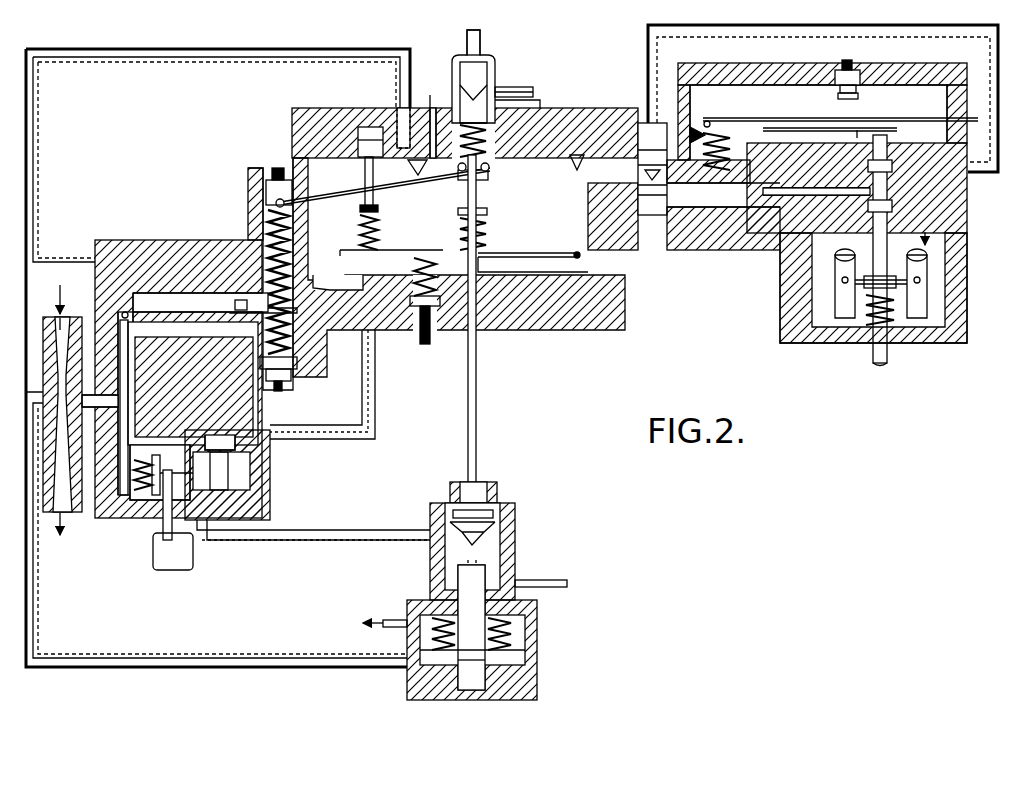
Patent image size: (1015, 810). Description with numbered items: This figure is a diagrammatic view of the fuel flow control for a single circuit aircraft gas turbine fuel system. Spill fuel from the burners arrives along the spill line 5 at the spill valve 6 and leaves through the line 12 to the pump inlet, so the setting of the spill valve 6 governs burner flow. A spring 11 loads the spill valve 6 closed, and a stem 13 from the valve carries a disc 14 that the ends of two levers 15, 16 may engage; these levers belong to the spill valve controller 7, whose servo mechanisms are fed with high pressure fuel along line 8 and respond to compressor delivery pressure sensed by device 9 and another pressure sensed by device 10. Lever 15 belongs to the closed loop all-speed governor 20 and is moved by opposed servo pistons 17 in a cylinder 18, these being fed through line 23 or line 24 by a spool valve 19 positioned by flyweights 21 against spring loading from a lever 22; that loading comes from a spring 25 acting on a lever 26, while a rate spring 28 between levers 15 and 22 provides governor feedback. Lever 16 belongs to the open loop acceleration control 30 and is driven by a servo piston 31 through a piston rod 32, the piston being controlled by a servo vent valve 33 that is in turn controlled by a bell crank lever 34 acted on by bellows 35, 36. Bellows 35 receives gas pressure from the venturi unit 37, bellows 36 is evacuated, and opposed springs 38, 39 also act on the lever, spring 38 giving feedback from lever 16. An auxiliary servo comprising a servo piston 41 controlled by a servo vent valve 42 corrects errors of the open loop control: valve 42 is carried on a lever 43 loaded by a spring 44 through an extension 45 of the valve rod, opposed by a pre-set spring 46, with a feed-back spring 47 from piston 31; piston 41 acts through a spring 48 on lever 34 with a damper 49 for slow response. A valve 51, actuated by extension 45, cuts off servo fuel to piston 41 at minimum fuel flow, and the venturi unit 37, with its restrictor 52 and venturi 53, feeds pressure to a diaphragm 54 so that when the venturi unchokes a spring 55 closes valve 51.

The spill line 5 is at (520, 87).
The spill valve 6 is at (500, 72).
The spill valve controller 7 is at (510, 338).
The high pressure fuel line 8 is at (578, 598).
The compressor delivery pressure sensing device 9 is at (60, 295).
The pressure sensing device 10 is at (228, 570).
The spring 11 is at (523, 104).
The line 12 is at (480, 44).
The stem 13 is at (492, 170).
The disc 14 is at (457, 210).
The lever 15 is at (540, 172).
The lever 16 is at (456, 178).
The servo pistons 17 is at (645, 123).
The cylinder 18 is at (645, 205).
The spool valve 19 is at (892, 195).
The all-speed governor 20 is at (777, 300).
The flyweights 21 is at (915, 310).
The lever 22 is at (897, 129).
The line 23 is at (700, 218).
The line 24 is at (793, 35).
The spring 25 is at (858, 90).
The lever 26 is at (748, 125).
The rate spring 28 is at (745, 225).
The acceleration control 30 is at (245, 188).
The servo piston 31 is at (370, 127).
The piston rod 32 is at (365, 175).
The servo vent valve 33 is at (235, 306).
The bell crank lever 34 is at (127, 318).
The bellows 35 is at (128, 428).
The bellows 36 is at (160, 403).
The venturi unit 37 is at (62, 414).
The spring 38 is at (260, 232).
The spring 39 is at (295, 368).
The servo piston 41 is at (228, 472).
The servo vent valve 42 is at (350, 262).
The lever 43 is at (552, 262).
The spring 44 is at (488, 226).
The extension 45 is at (477, 205).
The pre-set spring 46 is at (408, 268).
The feed-back spring 47 is at (358, 235).
The spring 48 is at (138, 460).
The damper 49 is at (185, 562).
The valve 51 is at (512, 520).
The restrictor 52 is at (70, 325).
The venturi 53 is at (105, 505).
The diaphragm 54 is at (525, 650).
The spring 55 is at (420, 643).